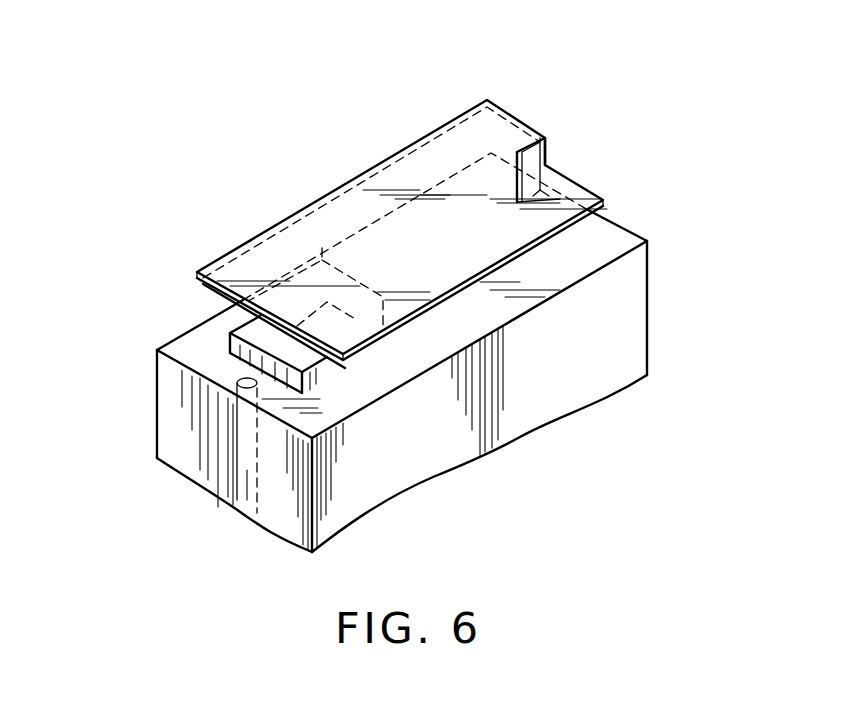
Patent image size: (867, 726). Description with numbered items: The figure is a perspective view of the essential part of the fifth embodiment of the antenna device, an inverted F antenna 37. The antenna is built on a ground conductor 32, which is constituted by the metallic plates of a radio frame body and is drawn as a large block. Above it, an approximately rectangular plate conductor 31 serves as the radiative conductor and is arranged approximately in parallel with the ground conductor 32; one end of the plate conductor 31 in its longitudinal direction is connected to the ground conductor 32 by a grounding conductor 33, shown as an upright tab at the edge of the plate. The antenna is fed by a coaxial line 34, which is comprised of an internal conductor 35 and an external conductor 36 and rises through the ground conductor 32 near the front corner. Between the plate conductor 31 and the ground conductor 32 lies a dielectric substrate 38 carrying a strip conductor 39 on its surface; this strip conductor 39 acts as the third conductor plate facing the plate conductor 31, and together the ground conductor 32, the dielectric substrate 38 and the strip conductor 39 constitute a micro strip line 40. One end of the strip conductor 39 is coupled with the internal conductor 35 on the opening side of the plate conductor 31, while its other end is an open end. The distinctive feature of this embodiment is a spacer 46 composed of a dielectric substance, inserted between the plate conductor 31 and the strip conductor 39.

The plate conductor 31 is at (353, 203).
The ground conductor 32 is at (607, 242).
The grounding conductor 33 is at (548, 157).
The coaxial line 34 is at (208, 489).
The internal conductor 35 is at (172, 416).
The external conductor 36 is at (174, 447).
The inverted F antenna 37 is at (407, 199).
The dielectric substrate 38 is at (328, 367).
The strip conductor 39 is at (317, 360).
The micro strip line 40 is at (303, 403).
The spacer 46 is at (227, 305).